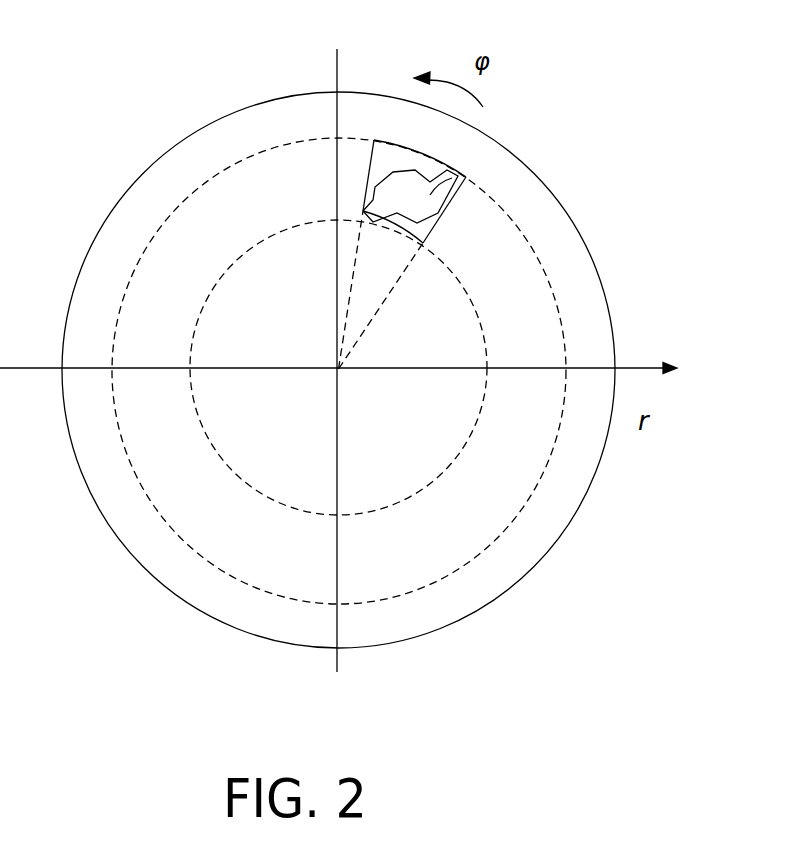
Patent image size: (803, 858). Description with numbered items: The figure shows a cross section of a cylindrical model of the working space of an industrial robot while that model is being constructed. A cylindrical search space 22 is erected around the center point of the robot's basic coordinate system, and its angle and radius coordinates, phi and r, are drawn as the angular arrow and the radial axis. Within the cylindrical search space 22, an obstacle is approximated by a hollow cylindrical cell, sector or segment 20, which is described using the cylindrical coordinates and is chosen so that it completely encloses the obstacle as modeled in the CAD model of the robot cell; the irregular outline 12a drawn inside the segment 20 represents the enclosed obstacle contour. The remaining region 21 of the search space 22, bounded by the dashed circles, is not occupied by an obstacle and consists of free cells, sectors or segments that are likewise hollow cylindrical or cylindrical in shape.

The cylindrical search space 22 is at (120, 102).
The remaining region 21 is at (525, 303).
The segment 20 is at (388, 157).
The structure 12a is at (460, 173).